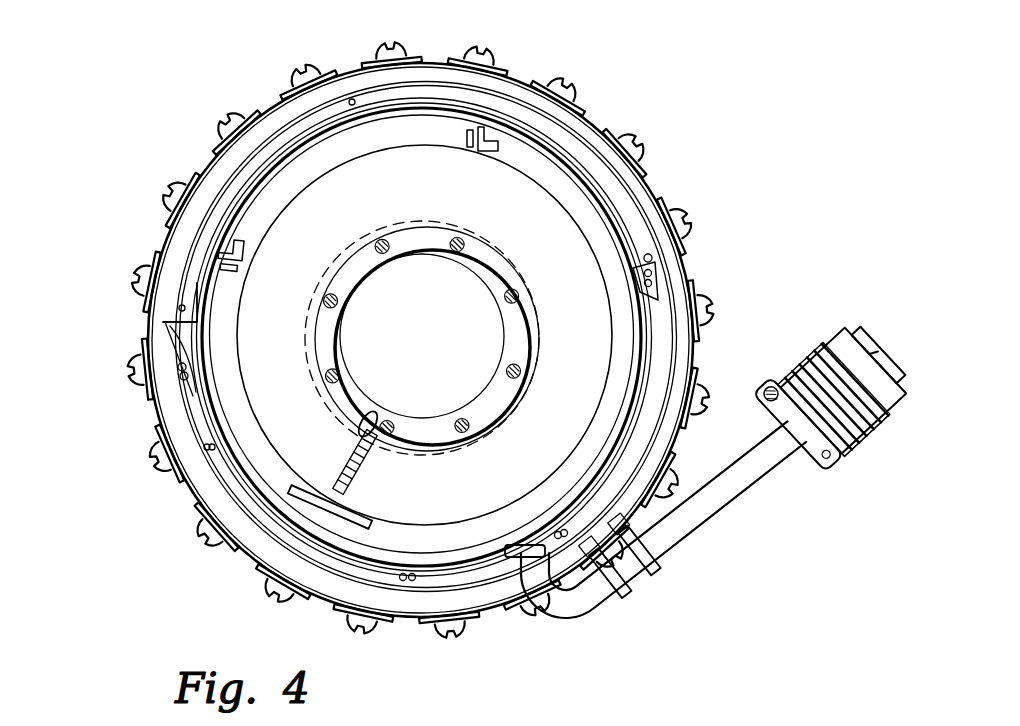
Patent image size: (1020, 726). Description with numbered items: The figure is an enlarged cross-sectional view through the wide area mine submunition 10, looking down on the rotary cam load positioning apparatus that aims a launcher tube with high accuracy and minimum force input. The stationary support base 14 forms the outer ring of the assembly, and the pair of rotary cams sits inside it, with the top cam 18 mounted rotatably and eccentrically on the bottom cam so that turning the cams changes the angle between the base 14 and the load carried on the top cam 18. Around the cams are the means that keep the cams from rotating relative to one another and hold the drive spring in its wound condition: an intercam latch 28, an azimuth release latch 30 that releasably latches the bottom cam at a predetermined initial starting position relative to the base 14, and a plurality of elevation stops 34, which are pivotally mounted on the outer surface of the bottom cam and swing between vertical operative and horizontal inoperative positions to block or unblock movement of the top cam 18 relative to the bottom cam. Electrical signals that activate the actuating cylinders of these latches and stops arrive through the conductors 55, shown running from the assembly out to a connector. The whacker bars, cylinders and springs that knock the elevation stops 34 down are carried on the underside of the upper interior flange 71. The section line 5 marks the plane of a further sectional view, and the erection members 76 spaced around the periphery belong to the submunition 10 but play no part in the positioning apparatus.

The wide area mine (WAM) submunition 10 is at (571, 58).
The stationary support base 14 is at (600, 116).
The top rotary cam 18 is at (756, 725).
The intercam latch 28 is at (356, 503).
The azimuth release latch 30 is at (372, 525).
The elevation stops 34 is at (474, 167).
The section line 5- 5 is at (248, 191).
The conductors 55 is at (655, 366).
The upper interior flange 71 is at (493, 100).
The erection members 76 is at (202, 170).